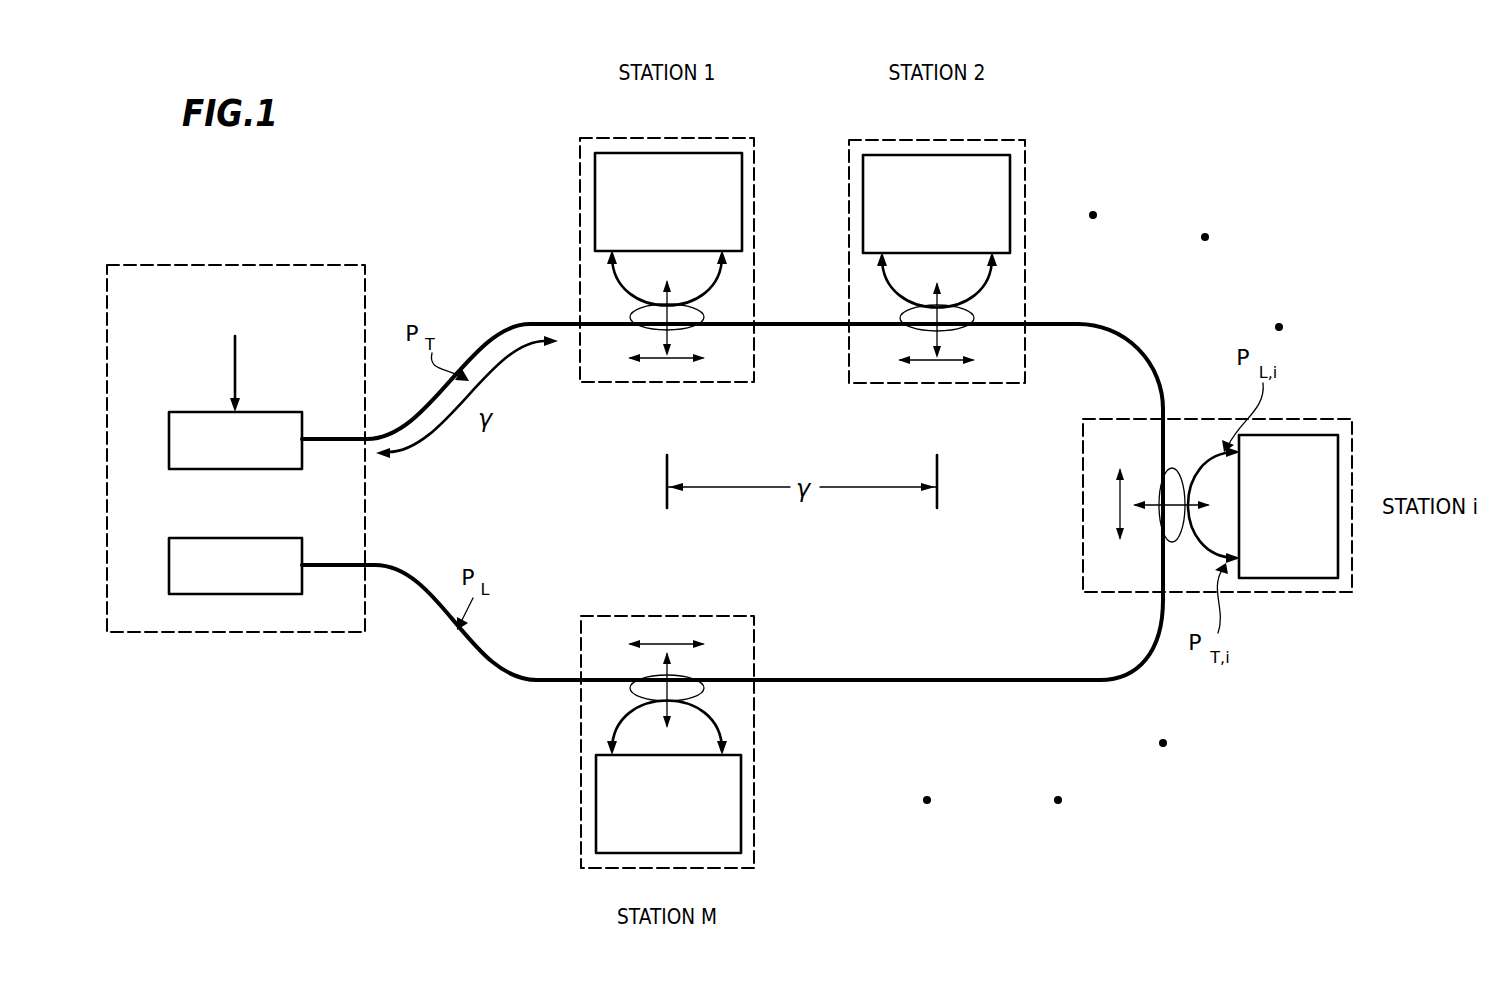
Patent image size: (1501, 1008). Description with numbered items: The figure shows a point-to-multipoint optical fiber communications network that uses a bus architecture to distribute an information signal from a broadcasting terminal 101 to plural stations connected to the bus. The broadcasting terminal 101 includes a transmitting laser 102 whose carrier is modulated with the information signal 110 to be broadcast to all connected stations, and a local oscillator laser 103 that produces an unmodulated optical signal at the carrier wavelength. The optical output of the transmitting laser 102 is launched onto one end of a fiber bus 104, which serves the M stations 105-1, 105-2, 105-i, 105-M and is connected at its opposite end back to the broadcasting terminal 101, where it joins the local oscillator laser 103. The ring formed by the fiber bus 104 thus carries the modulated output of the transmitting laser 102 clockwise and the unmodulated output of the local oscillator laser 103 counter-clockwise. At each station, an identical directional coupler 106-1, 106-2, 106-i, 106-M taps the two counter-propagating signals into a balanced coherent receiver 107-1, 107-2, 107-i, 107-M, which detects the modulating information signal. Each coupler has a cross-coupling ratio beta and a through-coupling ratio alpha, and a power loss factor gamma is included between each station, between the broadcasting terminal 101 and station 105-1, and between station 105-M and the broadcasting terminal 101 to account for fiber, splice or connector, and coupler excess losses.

The broadcasting terminal 101 is at (128, 265).
The transmitting laser 102 is at (278, 412).
The local oscillator laser 103 is at (278, 538).
The fiber bus 104 is at (512, 325).
The information signal 110 is at (235, 360).
The station 105-1 is at (712, 138).
The station 105-2 is at (990, 140).
The station 105-i is at (1335, 419).
The station 105-M is at (755, 805).
The directional coupler 106-1 is at (700, 312).
The directional coupler 106-2 is at (975, 318).
The directional coupler 106-i is at (1176, 470).
The directional coupler 106-M is at (700, 683).
The balanced coherent receiver 107-1 is at (595, 165).
The balanced coherent receiver 107-2 is at (1010, 186).
The balanced coherent receiver 107-i is at (1323, 578).
The balanced coherent receiver 107-M is at (596, 812).